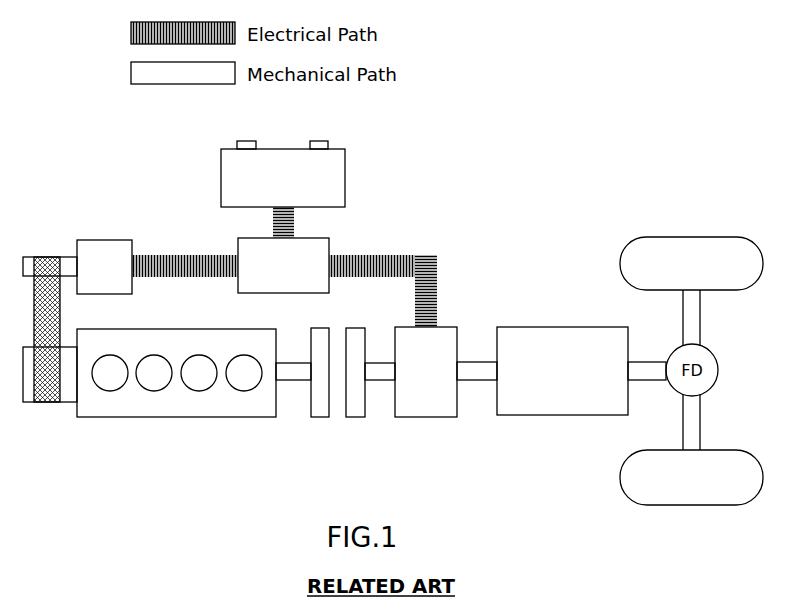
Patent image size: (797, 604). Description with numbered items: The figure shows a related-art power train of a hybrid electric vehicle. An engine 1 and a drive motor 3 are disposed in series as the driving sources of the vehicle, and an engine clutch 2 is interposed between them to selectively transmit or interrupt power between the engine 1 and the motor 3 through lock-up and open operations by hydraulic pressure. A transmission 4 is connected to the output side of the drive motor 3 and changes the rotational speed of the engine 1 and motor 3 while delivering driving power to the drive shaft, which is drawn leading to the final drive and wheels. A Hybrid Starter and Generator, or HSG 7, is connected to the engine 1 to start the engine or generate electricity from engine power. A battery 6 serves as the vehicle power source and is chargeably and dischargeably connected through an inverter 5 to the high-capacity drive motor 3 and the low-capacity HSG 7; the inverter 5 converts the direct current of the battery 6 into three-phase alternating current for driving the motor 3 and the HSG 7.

The engine 1 is at (177, 417).
The engine clutch 2 is at (356, 417).
The motor 3 is at (423, 417).
The transmission 4 is at (563, 415).
The inverter 5 is at (315, 238).
The battery 6 is at (345, 178).
The Hybrid Starter and Generator (HSG) 7 is at (101, 240).